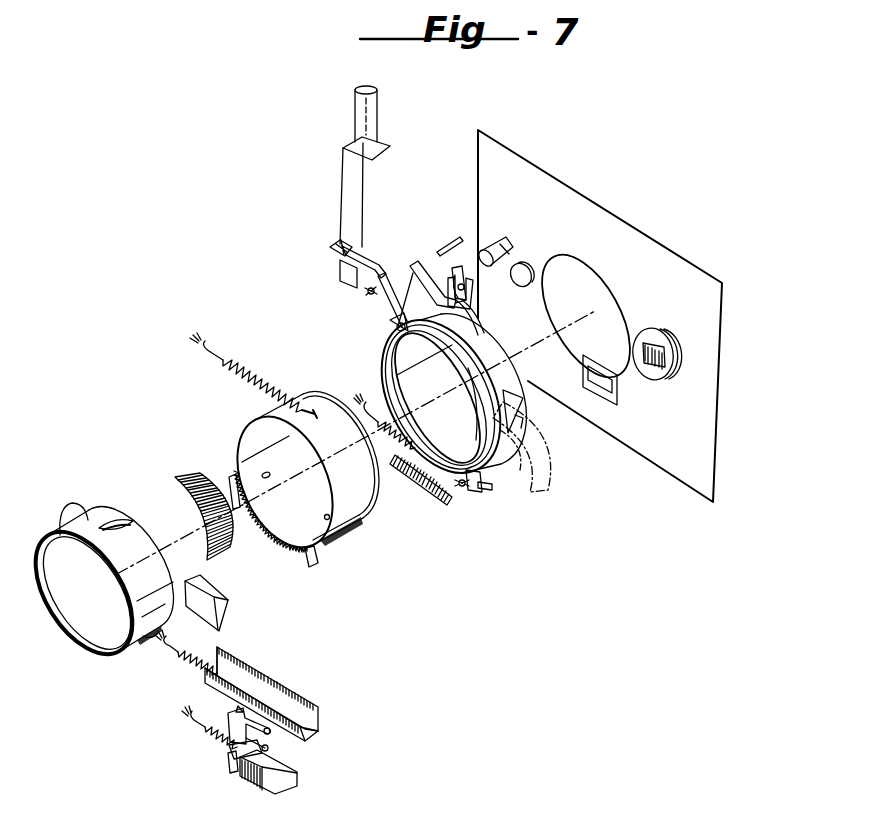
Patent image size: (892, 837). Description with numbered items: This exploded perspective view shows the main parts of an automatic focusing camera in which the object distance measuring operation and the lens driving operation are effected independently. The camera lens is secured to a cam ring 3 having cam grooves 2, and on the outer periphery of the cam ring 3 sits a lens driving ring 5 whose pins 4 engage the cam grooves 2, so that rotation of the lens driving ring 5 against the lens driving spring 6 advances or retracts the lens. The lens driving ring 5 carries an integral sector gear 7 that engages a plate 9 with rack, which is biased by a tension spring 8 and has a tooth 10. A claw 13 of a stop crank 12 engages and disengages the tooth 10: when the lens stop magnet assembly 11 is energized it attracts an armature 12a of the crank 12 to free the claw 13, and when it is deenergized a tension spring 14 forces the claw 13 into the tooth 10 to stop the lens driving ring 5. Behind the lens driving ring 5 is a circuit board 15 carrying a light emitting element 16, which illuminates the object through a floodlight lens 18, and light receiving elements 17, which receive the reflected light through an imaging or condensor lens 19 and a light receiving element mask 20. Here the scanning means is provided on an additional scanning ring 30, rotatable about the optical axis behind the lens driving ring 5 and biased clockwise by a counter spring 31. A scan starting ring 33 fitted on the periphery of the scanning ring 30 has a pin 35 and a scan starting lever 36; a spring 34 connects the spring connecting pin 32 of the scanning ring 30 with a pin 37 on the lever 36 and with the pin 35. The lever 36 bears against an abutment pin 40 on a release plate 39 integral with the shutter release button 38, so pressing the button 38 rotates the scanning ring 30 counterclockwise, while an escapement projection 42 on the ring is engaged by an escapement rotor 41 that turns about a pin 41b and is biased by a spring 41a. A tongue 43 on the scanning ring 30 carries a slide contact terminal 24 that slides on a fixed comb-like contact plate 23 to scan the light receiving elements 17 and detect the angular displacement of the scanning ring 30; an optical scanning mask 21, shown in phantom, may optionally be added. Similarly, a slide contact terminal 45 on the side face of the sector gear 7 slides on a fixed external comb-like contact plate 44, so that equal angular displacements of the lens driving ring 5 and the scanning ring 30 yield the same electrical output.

The cam grooves 2 is at (114, 519).
The cam ring 3 is at (142, 516).
The pins 4 is at (326, 519).
The lens driving ring 5 is at (265, 408).
The lens driving spring 6 is at (262, 376).
The sector gear 7 is at (316, 558).
The tension spring 8 is at (195, 664).
The plate with rack 9 is at (322, 718).
The tooth 10 is at (300, 738).
The lens stop magnet assembly 11 is at (291, 786).
The stop crank 12 is at (230, 750).
The armature 12a is at (232, 772).
The claw 13 is at (236, 710).
The tension spring 14 is at (204, 732).
The circuit board 15 is at (693, 270).
The light emitting element 16 is at (528, 268).
The light receiving elements 17 is at (660, 340).
The floodlight lens 18 is at (77, 504).
The imaging or condensor lens 19 is at (225, 617).
The light receiving element mask 20 is at (618, 398).
The optical scanning mask 21 is at (540, 466).
The comb-like contact plate 23 is at (421, 498).
The slide contact terminal 24 is at (478, 488).
The scanning ring 30 is at (516, 364).
The counter spring 31 is at (374, 416).
The spring connecting pin 32 is at (411, 266).
The scan starting ring 33 is at (465, 486).
The spring 34 is at (385, 311).
The pin 35 is at (393, 340).
The scan starting lever 36 is at (340, 274).
The pin 37 is at (368, 293).
The shutter release button 38 is at (360, 130).
The release plate 39 is at (345, 188).
The abutment pin 40 is at (331, 246).
The escapement rotor 41 is at (473, 298).
The spring 41a is at (490, 242).
The pin 41b is at (452, 270).
The escapement projection 42 is at (497, 331).
The tongue 43 is at (492, 490).
The comb-like contact plate 44 is at (222, 556).
The slide contact terminal 45 is at (243, 512).